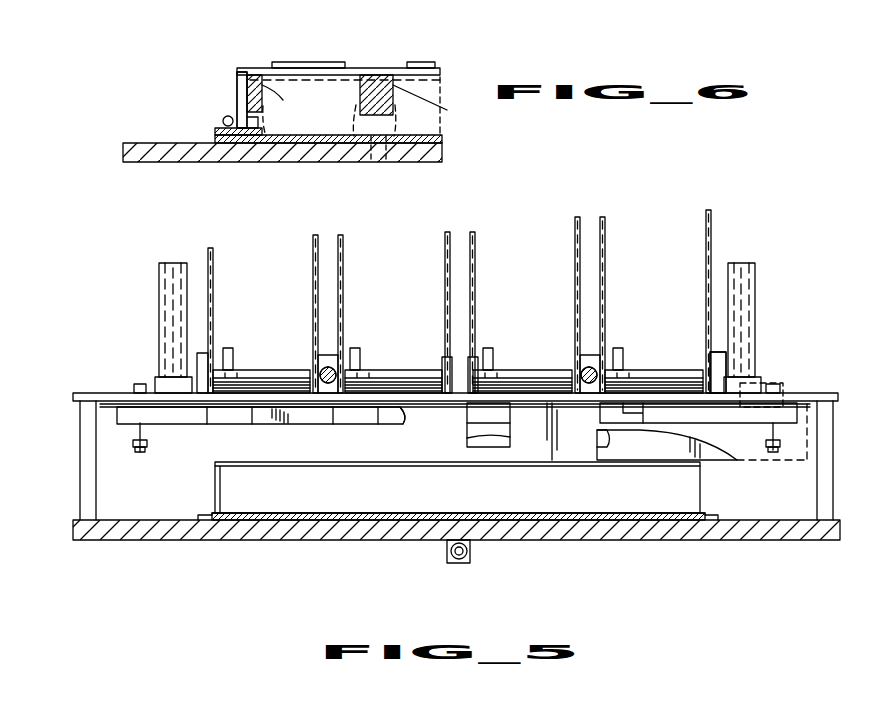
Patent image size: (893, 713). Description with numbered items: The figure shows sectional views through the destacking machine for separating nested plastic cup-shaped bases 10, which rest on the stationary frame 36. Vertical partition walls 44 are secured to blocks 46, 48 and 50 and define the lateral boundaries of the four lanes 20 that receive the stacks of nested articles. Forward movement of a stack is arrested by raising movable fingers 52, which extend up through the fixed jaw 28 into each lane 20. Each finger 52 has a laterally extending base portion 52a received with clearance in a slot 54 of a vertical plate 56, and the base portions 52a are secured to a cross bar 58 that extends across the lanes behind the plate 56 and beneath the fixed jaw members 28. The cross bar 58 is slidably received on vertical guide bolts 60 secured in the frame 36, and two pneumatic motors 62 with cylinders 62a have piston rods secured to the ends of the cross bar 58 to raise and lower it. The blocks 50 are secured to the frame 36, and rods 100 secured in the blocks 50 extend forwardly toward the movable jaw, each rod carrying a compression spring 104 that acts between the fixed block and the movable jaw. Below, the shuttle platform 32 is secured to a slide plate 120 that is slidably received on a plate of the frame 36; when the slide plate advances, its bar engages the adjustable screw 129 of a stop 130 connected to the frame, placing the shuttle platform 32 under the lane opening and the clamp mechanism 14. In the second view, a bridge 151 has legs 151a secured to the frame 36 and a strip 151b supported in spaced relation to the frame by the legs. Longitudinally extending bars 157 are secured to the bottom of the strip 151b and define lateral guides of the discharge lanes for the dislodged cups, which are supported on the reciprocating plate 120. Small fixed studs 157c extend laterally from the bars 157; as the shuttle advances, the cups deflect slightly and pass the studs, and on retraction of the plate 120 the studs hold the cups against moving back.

In FIG. 6, the plastic cup-shaped base 10 is at (380, 160).
In FIG. 5, the clamp mechanism 14 is at (708, 381).
In FIG. 5, the lane 20 is at (260, 264).
In FIG. 5, the fixed jaw 28 is at (248, 370).
In FIG. 5, the shuttle platform 32 is at (213, 488).
In FIG. 6, the stationary frame 36 is at (121, 152).
In FIG. 5, the stationary frame 36 is at (181, 541).
In FIG. 5, the vertical partition wall 44 is at (213, 290).
In FIG. 5, the block 46 is at (197, 360).
In FIG. 5, the block 48 is at (455, 352).
In FIG. 5, the block 50 is at (328, 354).
In FIG. 5, the movable finger 52 is at (228, 348).
In FIG. 5, the base portion 52a is at (240, 426).
In FIG. 5, the slot 54 is at (602, 448).
In FIG. 5, the vertical plate 56 is at (404, 443).
In FIG. 5, the cross bar 58 is at (198, 425).
In FIG. 5, the vertical guide bolt 60 is at (138, 430).
In FIG. 5, the pneumatic motor 62 is at (159, 287).
In FIG. 5, the cylinder 62a is at (165, 309).
In FIG. 5, the rod 100 is at (334, 369).
In FIG. 5, the compression spring 104 is at (321, 370).
In FIG. 6, the slide plate 120 is at (442, 138).
In FIG. 5, the slide plate 120 is at (197, 517).
In FIG. 5, the adjustable screw 129 is at (450, 552).
In FIG. 5, the stop 130 is at (472, 556).
In FIG. 6, the bridge 151 is at (235, 70).
In FIG. 6, the leg 151a is at (237, 83).
In FIG. 6, the strip 151b is at (362, 68).
In FIG. 6, the longitudinally extending bar 157 is at (250, 74).
In FIG. 6, the stud 157c is at (377, 106).